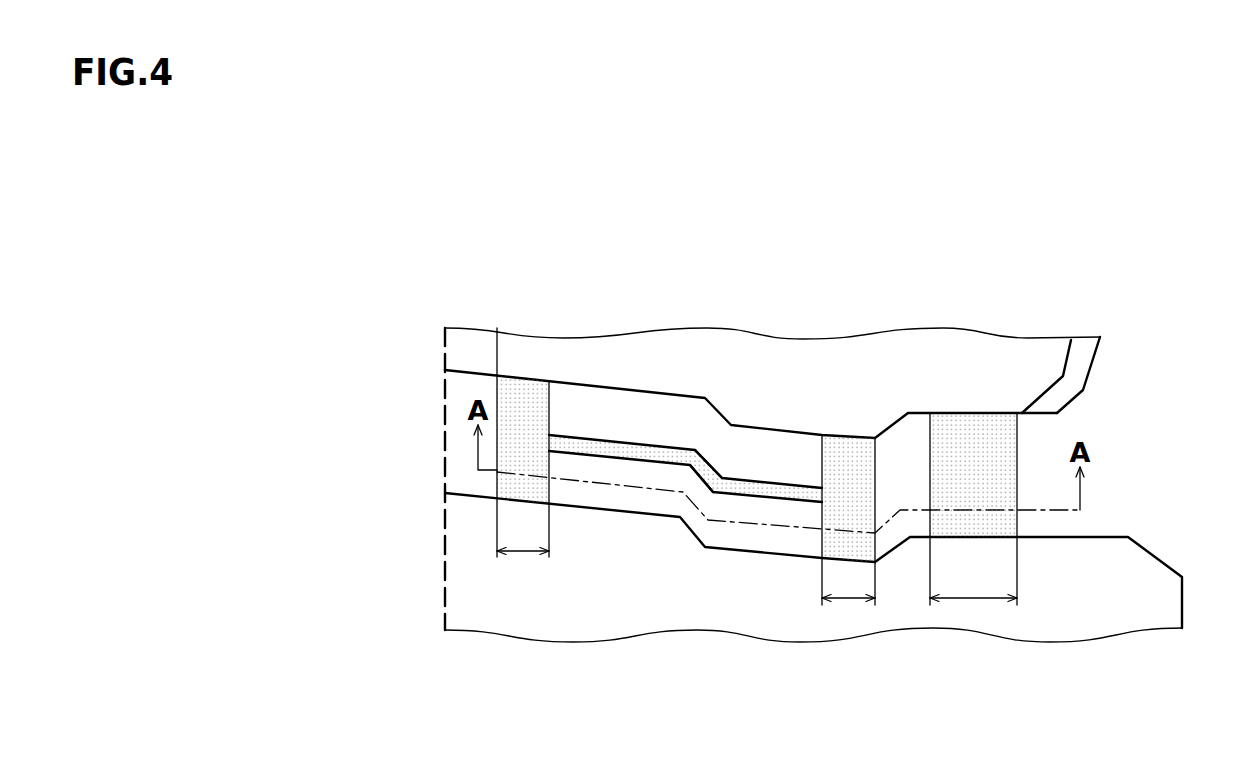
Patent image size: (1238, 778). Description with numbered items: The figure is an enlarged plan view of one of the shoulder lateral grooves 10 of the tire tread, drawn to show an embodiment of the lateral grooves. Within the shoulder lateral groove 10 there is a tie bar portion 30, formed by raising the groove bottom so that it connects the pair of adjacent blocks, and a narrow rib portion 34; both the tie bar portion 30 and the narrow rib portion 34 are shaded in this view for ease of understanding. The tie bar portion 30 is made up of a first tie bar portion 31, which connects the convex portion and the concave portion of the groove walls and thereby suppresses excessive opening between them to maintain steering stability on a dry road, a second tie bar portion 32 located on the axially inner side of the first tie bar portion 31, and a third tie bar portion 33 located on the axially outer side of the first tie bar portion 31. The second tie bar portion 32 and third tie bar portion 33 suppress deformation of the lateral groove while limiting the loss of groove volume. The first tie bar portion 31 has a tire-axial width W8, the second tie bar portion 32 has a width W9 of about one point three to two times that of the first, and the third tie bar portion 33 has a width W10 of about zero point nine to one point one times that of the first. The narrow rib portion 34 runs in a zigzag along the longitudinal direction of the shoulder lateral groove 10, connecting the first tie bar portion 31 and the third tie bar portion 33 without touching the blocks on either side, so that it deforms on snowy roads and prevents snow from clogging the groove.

The shoulder lateral groove 10 is at (775, 492).
The tie bar portion 30 is at (953, 236).
The first tie bar portion 31 is at (849, 470).
The second tie bar portion 32 is at (974, 465).
The third tie bar portion 33 is at (515, 420).
The narrow rib portion 34 is at (705, 470).
The width of first tie bar portion W8 is at (848, 601).
The width of second tie bar portion W9 is at (972, 601).
The width of third tie bar portion W10 is at (522, 555).